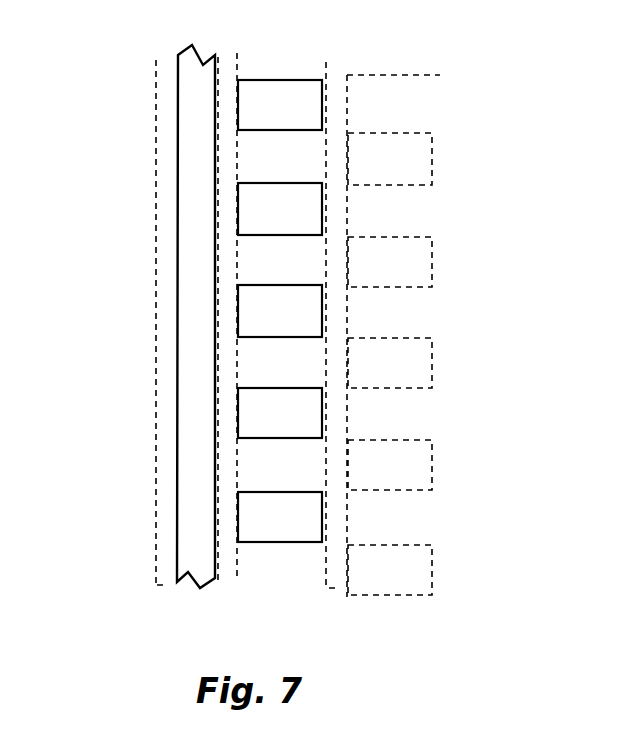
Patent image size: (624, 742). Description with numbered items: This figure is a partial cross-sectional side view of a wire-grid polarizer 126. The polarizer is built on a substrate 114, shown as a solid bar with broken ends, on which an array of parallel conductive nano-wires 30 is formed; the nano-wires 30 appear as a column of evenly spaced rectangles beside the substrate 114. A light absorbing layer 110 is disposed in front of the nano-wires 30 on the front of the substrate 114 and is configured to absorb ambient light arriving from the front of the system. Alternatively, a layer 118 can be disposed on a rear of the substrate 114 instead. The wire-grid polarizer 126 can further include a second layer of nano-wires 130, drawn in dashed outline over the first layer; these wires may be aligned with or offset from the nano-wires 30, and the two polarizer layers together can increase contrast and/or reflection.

The nano-wires 30 is at (265, 80).
The light absorbing layer 110 is at (155, 182).
The substrate 114 is at (177, 102).
The layer 118 is at (215, 272).
The wire-grid polarizer 126 is at (267, 568).
The second layer of nano-wires 130 is at (435, 243).